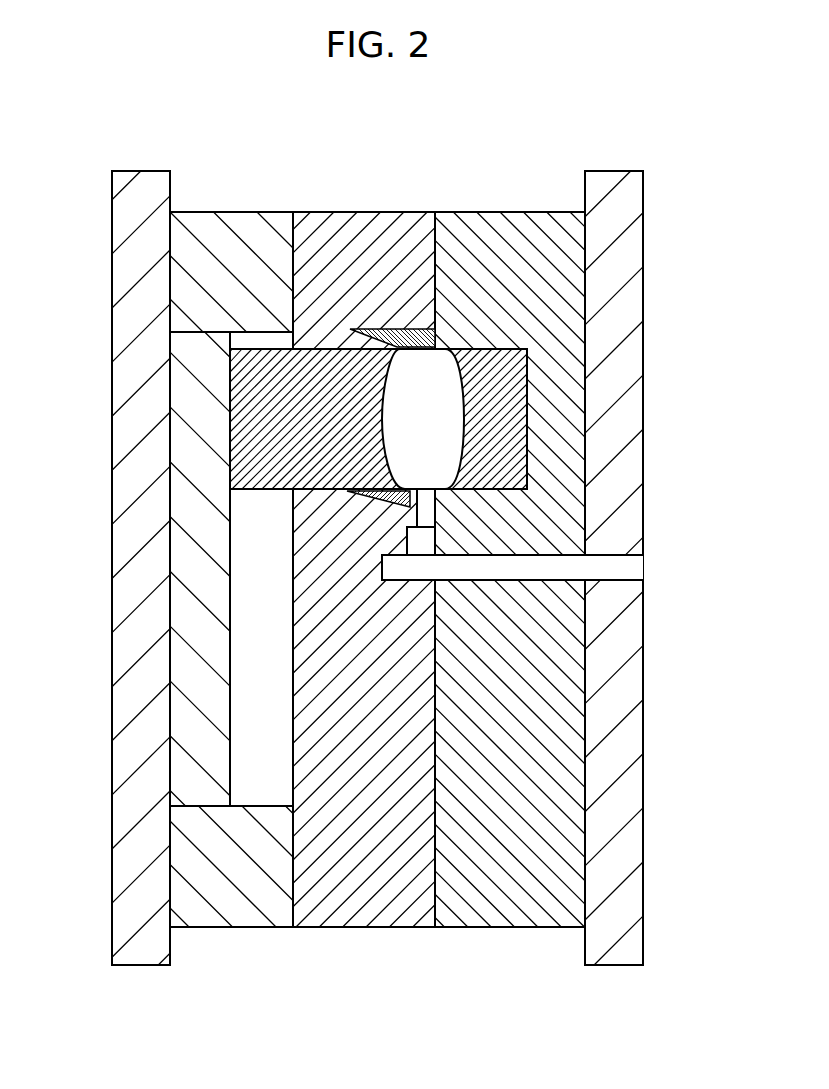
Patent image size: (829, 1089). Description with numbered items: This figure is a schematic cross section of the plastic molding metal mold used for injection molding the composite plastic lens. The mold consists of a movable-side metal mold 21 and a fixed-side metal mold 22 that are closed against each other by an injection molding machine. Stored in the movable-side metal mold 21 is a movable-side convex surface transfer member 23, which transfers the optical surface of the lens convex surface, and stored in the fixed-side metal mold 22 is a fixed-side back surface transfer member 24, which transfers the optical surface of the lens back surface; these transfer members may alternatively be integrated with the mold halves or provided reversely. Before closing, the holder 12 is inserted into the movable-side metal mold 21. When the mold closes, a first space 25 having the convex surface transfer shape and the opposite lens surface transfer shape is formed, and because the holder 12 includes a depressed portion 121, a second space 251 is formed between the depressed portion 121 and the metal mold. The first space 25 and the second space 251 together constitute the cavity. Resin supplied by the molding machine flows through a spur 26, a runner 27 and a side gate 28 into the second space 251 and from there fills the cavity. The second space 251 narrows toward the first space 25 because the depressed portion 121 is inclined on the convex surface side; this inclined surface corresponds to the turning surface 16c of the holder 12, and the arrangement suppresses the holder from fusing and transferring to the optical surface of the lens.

The movable-side metal mold 21 is at (313, 285).
The fixed-side metal mold 22 is at (553, 306).
The movable-side convex surface transfer member 23 is at (250, 403).
The fixed-side back surface transfer member 24 is at (503, 431).
The first space 25 is at (393, 437).
The depressed portion 121 is at (433, 493).
The second space 251 is at (428, 499).
The side gate 28 is at (430, 529).
The runner 27 is at (425, 550).
The spur 26 is at (543, 568).
The holder 12 is at (347, 501).
The turning surface 16c is at (387, 503).